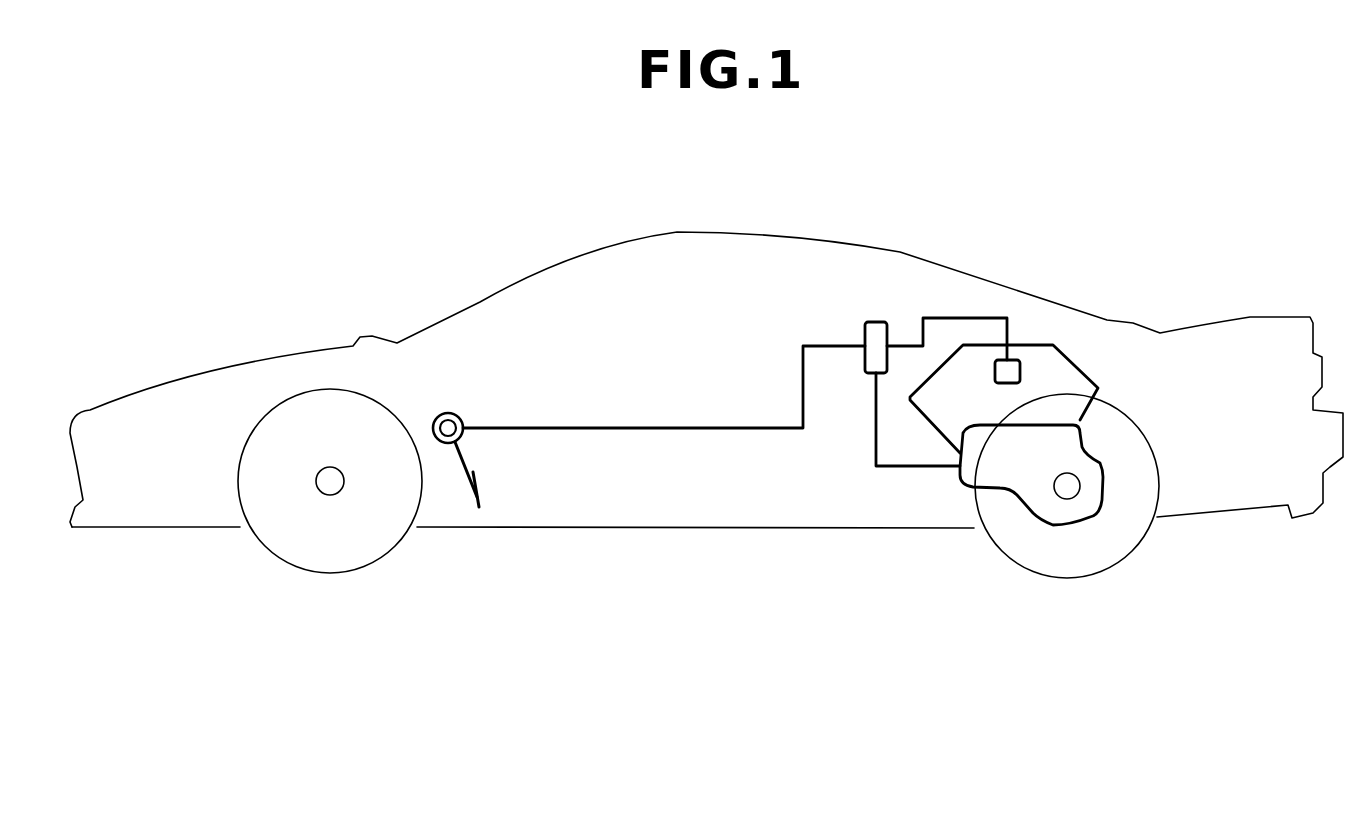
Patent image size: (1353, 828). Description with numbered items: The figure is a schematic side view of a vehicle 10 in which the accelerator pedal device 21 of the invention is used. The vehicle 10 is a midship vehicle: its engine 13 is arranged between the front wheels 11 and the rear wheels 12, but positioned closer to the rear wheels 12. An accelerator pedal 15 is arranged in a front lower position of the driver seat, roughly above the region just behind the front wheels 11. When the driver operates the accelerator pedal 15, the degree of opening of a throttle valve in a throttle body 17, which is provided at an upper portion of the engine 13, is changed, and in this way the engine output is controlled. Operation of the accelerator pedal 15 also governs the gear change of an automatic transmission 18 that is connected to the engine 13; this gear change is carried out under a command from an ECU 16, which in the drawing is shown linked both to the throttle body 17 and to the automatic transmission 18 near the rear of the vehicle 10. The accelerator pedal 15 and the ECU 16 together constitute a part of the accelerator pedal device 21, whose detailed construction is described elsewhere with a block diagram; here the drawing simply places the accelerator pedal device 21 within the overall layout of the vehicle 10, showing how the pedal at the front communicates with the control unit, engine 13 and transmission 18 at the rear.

The vehicle 10 is at (516, 244).
The front wheels 11 is at (285, 562).
The rear wheels 12 is at (1140, 547).
The engine 13 is at (1073, 360).
The accelerator pedal 15 is at (478, 498).
The ECU 16 is at (872, 322).
The throttle body 17 is at (1023, 370).
The automatic transmission 18 is at (1027, 517).
The accelerator pedal device 21 is at (660, 488).